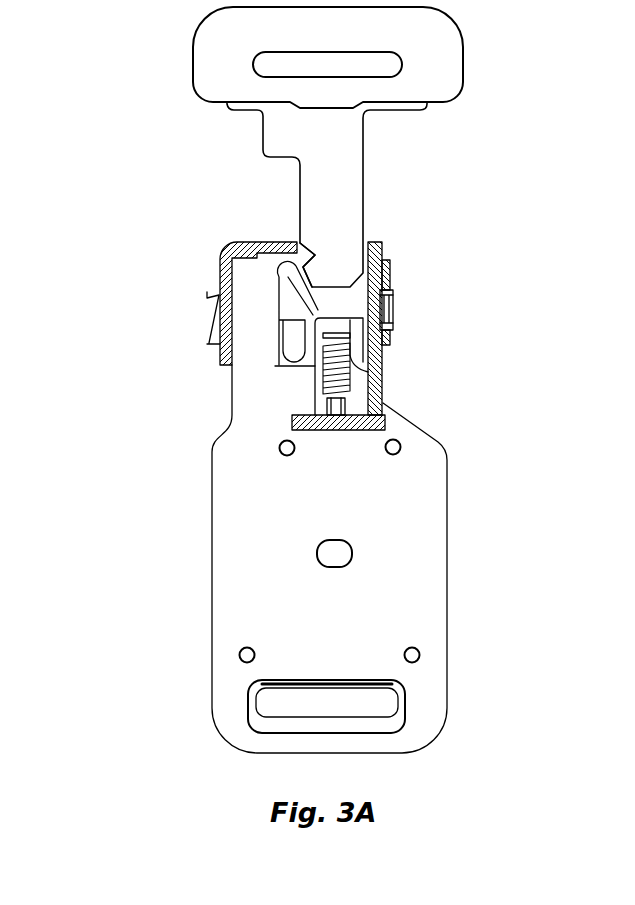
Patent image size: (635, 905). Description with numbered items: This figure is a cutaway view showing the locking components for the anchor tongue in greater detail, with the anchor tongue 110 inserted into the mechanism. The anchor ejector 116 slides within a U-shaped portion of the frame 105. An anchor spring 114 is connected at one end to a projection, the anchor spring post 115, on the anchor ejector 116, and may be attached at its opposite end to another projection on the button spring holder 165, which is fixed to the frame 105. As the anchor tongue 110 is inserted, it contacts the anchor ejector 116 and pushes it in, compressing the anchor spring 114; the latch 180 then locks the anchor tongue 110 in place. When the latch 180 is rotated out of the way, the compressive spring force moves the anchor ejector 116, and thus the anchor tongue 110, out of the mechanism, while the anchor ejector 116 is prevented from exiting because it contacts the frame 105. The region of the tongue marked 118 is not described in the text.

The frame 105 is at (170, 542).
The anchor tongue 110 is at (345, 193).
The anchor spring 114 is at (386, 406).
The anchor spring post 115 is at (353, 329).
The anchor ejector 116 is at (346, 318).
The tongue notch 118 is at (332, 275).
The button spring holder 165 is at (350, 431).
The latch 180 is at (292, 278).